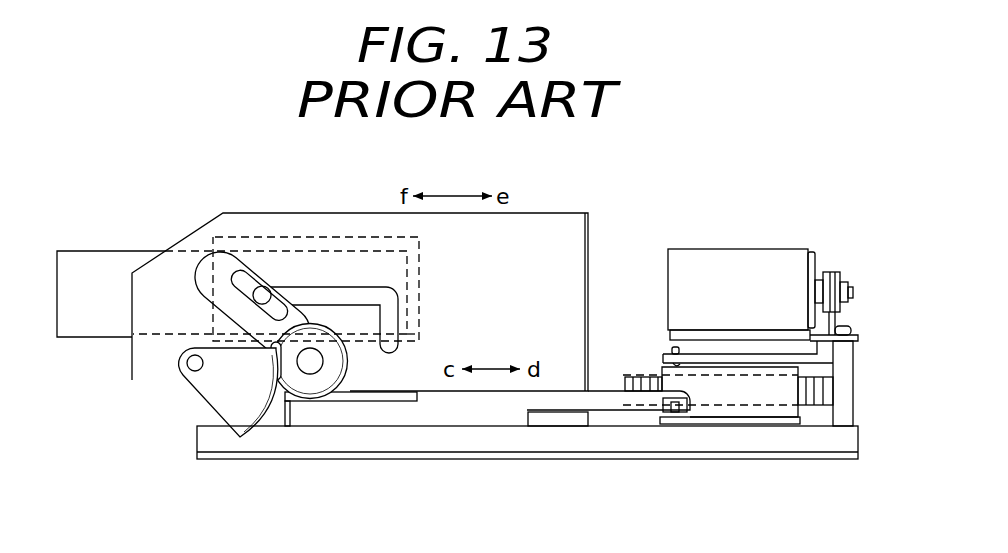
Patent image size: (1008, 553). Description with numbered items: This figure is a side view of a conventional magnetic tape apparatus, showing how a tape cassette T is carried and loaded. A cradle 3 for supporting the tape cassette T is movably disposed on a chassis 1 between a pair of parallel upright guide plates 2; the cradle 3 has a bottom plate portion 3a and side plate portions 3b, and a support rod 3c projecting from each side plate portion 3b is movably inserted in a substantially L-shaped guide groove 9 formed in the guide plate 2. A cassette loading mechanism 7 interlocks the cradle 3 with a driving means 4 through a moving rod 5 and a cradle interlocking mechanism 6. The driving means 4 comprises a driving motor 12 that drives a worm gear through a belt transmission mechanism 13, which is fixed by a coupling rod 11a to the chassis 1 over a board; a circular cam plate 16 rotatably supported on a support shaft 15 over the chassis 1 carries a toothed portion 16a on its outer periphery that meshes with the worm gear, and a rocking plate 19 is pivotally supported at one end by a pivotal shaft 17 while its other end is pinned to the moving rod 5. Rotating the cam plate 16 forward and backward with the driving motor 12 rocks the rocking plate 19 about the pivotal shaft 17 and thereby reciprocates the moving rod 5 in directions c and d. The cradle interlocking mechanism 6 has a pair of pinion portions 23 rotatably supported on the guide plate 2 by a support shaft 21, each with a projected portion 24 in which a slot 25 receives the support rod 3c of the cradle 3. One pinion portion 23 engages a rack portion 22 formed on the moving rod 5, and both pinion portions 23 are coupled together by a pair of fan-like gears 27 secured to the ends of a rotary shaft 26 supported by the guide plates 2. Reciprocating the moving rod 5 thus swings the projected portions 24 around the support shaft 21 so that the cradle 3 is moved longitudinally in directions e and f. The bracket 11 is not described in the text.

The tape cassette T is at (84, 268).
The chassis 1 is at (460, 440).
The guide plate 2 is at (576, 222).
The cradle 3 is at (308, 243).
The bottom plate portion 3a is at (419, 343).
The side plate portion 3b is at (419, 258).
The support rod 3c is at (264, 292).
The driving means 4 is at (787, 245).
The moving rod 5 is at (512, 410).
The cradle interlocking mechanism 6 is at (175, 433).
The cassette loading mechanism 7 is at (768, 308).
The guide groove 9 is at (362, 286).
The motor bracket 11 is at (752, 353).
The coupling rod 11a is at (842, 360).
The driving motor 12 is at (775, 258).
The belt transmission mechanism 13 is at (831, 270).
The support shaft 15 is at (728, 424).
The cam plate 16 is at (815, 412).
The toothed portion 16a is at (822, 390).
The pivotal shaft 17 is at (670, 350).
The rocking plate 19 is at (765, 424).
The support shaft 21 is at (308, 370).
The rack portion 22 is at (395, 402).
The pinion portion 23 is at (342, 417).
The projected portion 24 is at (205, 292).
The slot 25 is at (240, 257).
The rotary shaft 26 is at (188, 367).
The fan-like gear 27 is at (268, 416).